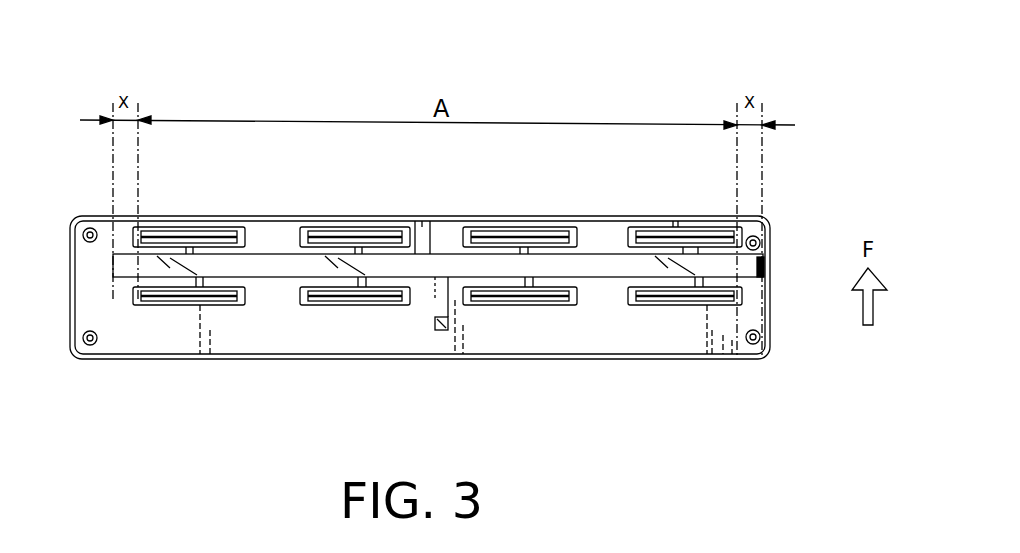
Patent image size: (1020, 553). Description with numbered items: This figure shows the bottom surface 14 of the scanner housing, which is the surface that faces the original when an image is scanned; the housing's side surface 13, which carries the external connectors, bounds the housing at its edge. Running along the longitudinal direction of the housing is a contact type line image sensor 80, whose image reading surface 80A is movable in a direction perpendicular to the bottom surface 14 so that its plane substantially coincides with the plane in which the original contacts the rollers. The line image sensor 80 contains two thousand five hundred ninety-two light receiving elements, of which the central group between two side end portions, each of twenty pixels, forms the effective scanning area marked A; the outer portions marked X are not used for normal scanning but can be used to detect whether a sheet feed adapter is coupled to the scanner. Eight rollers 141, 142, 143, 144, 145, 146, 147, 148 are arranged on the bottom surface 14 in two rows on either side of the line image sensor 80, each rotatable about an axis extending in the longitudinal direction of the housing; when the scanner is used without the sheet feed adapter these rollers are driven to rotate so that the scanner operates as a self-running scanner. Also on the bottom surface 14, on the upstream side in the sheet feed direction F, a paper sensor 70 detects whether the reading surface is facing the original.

The side surface 13 is at (622, 218).
The bottom surface 14 is at (593, 333).
The paper sensor 70 is at (441, 331).
The line image sensor 80 is at (272, 268).
The image reading surface 80A is at (451, 272).
The roller 141 is at (200, 298).
The roller 142 is at (350, 298).
The roller 143 is at (523, 298).
The roller 144 is at (683, 298).
The roller 145 is at (208, 237).
The roller 146 is at (332, 237).
The roller 147 is at (552, 240).
The roller 148 is at (703, 240).